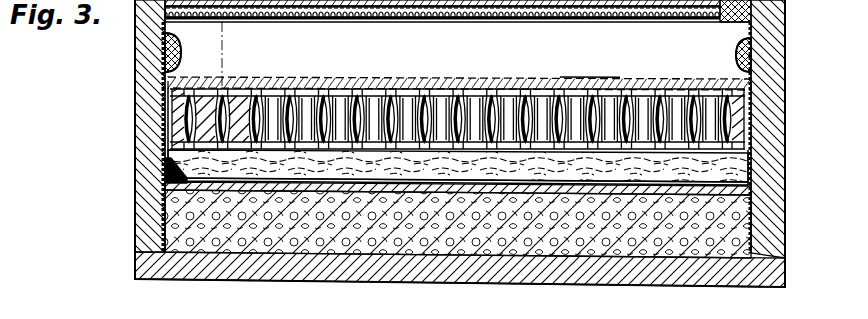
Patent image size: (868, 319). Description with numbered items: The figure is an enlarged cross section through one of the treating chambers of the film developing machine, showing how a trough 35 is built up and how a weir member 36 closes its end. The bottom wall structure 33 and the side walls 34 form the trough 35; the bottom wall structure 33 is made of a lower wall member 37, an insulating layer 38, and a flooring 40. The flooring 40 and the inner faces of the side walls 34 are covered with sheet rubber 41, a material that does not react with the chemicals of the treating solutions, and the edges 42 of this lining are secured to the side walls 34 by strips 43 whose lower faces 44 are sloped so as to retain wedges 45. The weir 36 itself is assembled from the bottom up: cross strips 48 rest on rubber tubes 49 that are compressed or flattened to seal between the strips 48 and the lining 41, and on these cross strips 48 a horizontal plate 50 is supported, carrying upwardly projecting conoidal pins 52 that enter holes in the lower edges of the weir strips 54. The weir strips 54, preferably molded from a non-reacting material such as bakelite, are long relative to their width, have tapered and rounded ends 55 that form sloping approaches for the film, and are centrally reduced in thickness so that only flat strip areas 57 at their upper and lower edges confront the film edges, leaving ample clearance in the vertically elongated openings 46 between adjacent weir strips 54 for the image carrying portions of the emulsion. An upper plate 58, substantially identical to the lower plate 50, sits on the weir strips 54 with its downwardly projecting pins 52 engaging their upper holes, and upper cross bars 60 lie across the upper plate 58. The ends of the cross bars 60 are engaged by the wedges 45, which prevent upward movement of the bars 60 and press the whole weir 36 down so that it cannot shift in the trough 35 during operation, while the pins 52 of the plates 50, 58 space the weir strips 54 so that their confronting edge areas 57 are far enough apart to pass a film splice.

The bottom wall structure 33 is at (366, 242).
The side wall structure 34 is at (148, 133).
The trough 35 is at (712, 50).
The weir member 36 is at (481, 84).
The lower wall member 37 is at (653, 275).
The insulating layer 38 is at (546, 260).
The flooring 40 is at (742, 211).
The sheet rubber 41 is at (157, 98).
The edge of sheet rubber 42 is at (163, 38).
The strip 43 is at (175, 56).
The lower face of strip 44 is at (181, 53).
The wedge 45 is at (162, 70).
The opening 46 is at (580, 80).
The cross strip 48 is at (180, 172).
The rubber tube 49 is at (752, 170).
The horizontal plate 50 is at (172, 165).
The conoidal pin 52 is at (287, 80).
The weir strip 54 is at (434, 110).
The end of weir strip 55 is at (418, 110).
The flat strip area 57 is at (558, 100).
The upper plate 58 is at (629, 96).
The upper cross bar 60 is at (323, 82).